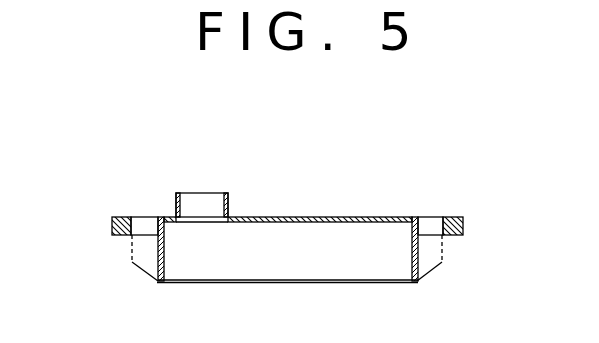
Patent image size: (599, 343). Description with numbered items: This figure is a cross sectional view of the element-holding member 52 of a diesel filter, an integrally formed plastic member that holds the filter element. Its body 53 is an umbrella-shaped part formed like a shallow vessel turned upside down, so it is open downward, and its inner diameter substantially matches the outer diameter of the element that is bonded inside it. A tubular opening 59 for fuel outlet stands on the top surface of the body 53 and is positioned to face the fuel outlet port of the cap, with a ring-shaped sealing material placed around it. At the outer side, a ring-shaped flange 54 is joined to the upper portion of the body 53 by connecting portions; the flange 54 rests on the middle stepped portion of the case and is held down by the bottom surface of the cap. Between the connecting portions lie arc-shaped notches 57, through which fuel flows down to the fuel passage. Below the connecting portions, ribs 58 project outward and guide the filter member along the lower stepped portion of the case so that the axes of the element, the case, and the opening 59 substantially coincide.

The element-holding member 52 is at (452, 212).
The body 53 is at (336, 218).
The flange 54 is at (112, 228).
The arc-shaped notches 57 is at (143, 224).
The ribs 58 is at (143, 258).
The opening for fuel outlet 59 is at (227, 196).